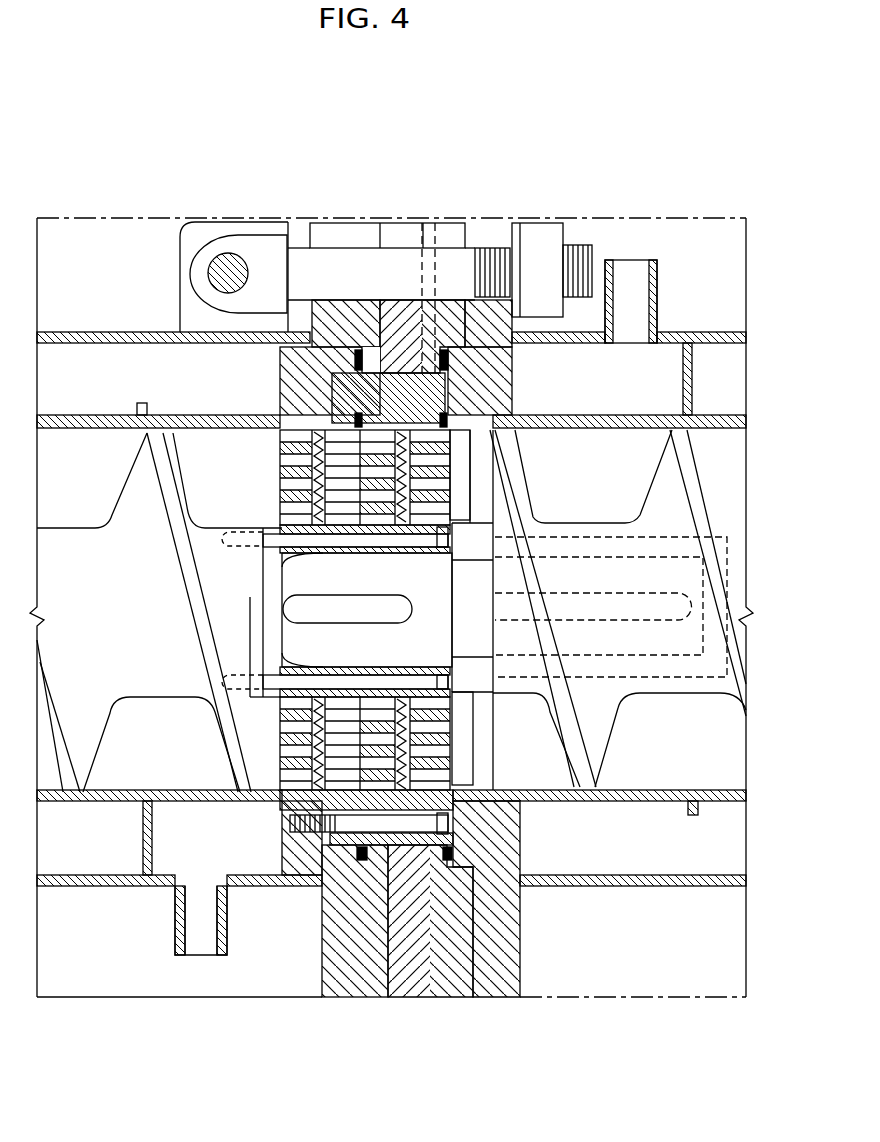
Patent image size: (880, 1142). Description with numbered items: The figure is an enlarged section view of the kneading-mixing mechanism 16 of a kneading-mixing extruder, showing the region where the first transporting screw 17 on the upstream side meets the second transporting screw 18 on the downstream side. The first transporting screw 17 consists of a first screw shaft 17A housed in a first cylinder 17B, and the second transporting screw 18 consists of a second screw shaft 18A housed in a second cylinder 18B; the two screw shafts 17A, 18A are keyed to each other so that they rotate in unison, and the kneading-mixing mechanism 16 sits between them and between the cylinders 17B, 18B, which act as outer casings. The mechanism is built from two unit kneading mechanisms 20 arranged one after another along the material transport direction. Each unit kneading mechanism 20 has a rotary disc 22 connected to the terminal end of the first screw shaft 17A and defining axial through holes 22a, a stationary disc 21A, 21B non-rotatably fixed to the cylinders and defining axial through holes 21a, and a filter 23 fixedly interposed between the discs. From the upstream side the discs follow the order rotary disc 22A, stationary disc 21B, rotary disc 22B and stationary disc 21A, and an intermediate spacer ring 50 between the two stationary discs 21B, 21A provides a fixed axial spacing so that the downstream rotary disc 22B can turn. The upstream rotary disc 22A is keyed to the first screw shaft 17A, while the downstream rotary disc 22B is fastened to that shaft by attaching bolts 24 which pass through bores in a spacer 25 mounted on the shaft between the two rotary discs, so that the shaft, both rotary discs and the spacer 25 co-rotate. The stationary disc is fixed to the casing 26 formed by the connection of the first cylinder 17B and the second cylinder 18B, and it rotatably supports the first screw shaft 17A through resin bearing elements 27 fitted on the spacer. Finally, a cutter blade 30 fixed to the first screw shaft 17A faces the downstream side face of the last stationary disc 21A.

The kneading-mixing mechanism 16 is at (272, 738).
The first transporting screw 17 is at (75, 458).
The first screw shaft 17A is at (293, 590).
The first cylinder 17B is at (105, 420).
The second transporting screw 18 is at (716, 444).
The second screw shaft 18A is at (580, 527).
The second cylinder 18B is at (660, 420).
The unit kneading mechanism 20 is at (398, 368).
The stationary disc 21A is at (427, 812).
The stationary disc 21B is at (357, 847).
The through holes 21a is at (443, 750).
The rotary disc 22 is at (277, 800).
The rotary disc 22A is at (292, 428).
The rotary disc 22B is at (383, 790).
The through holes 22a is at (280, 485).
The filter 23 is at (407, 680).
The attaching bolts 24 is at (253, 532).
The spacer 25 is at (293, 567).
The casing 26 is at (382, 1010).
The bearing elements 27 is at (350, 533).
The cutter blade 30 is at (465, 470).
The intermediate spacer ring 50 is at (370, 346).